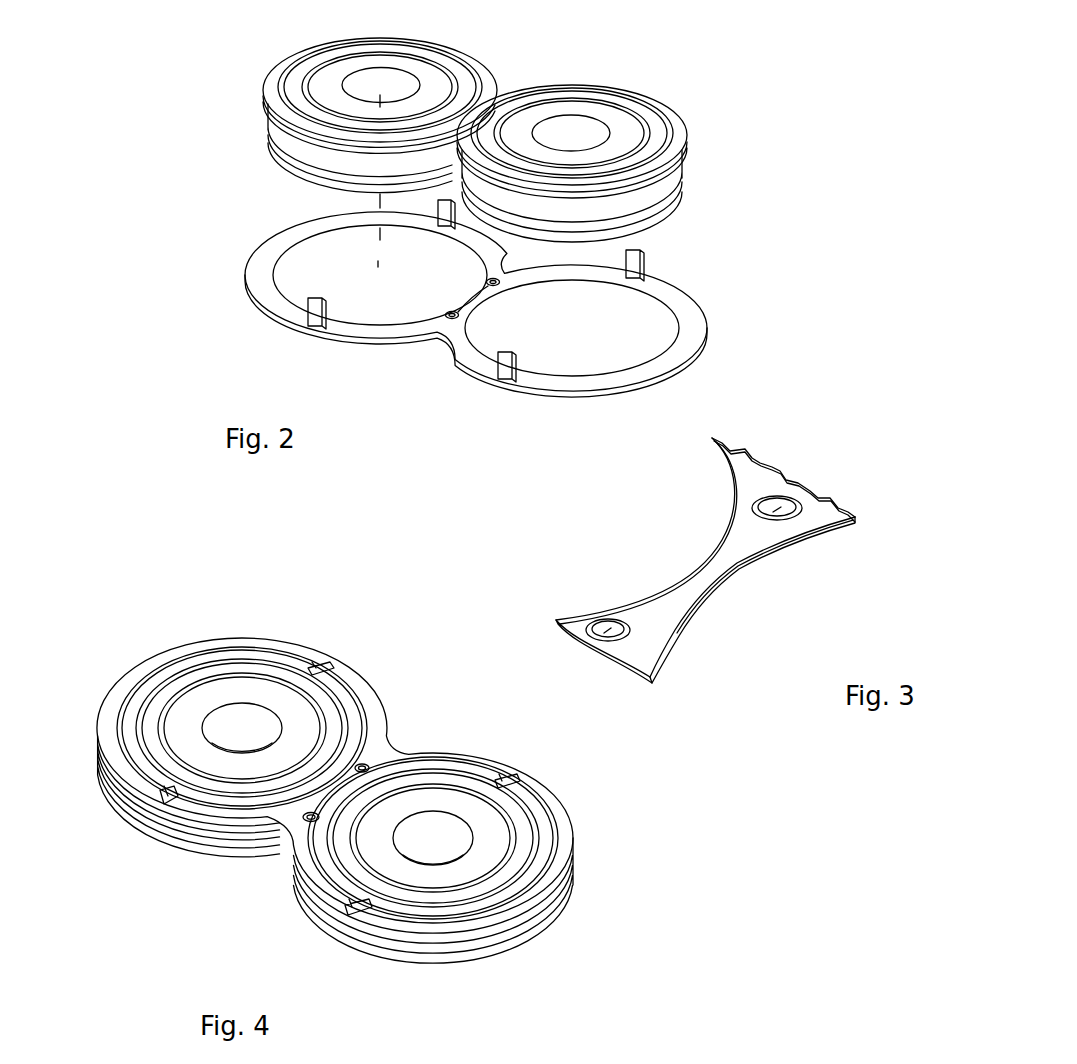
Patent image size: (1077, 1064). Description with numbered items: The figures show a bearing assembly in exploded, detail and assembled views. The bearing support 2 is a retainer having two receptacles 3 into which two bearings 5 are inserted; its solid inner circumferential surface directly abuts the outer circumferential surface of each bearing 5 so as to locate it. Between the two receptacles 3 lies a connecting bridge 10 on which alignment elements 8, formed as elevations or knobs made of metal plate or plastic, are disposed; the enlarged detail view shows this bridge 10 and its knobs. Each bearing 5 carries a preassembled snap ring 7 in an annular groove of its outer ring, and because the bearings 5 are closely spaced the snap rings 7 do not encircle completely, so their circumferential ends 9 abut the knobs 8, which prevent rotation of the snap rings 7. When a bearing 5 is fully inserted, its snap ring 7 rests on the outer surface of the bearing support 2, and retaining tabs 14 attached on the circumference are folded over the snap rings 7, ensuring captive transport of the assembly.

In FIG. 2, the bearing support 2 is at (695, 328).
In FIG. 2, the receptacle 3 is at (476, 300).
In FIG. 2, the bearing 5 is at (292, 137).
In FIG. 2, the snap ring 7 is at (484, 72).
In FIG. 4, the snap ring 7 is at (137, 693).
In FIG. 2, the alignment element 8 is at (452, 312).
In FIG. 3, the alignment element 8 is at (785, 500).
In FIG. 4, the alignment element 8 is at (367, 767).
In FIG. 2, the circumferential end 9 is at (511, 93).
In FIG. 2, the connecting bridge 10 is at (484, 297).
In FIG. 3, the connecting bridge 10 is at (712, 562).
In FIG. 2, the retaining tab 14 is at (641, 255).
In FIG. 4, the retaining tab 14 is at (318, 665).